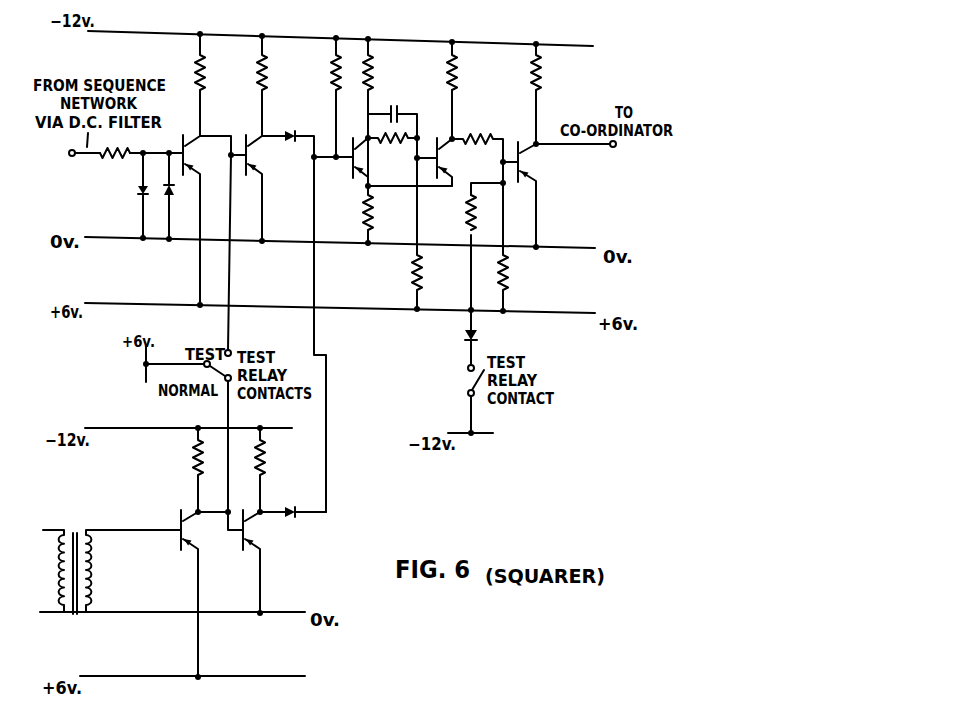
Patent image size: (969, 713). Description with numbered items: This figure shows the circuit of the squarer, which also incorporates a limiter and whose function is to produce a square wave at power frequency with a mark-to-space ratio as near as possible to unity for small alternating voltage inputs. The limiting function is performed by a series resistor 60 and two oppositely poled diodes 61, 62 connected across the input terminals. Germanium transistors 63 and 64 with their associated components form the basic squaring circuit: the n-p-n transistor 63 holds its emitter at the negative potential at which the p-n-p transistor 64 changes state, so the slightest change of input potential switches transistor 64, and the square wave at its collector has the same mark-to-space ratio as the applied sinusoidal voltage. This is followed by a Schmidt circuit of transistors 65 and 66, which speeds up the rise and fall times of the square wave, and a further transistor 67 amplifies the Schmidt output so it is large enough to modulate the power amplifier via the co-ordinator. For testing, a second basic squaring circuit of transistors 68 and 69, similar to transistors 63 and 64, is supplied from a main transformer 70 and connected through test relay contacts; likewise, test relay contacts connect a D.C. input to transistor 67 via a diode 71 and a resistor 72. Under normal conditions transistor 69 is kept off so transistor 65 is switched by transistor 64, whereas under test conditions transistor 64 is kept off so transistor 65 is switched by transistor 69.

The series resistor 60 is at (109, 156).
The diode 61 is at (139, 195).
The diode 62 is at (171, 189).
The germanium transistor 63 is at (210, 167).
The p-n-p transistor 64 is at (273, 167).
The transistor 65 is at (378, 170).
The transistor 66 is at (463, 170).
The transistor 67 is at (548, 172).
The transistor 68 is at (210, 544).
The transistor 69 is at (272, 544).
The main transformer 70 is at (118, 582).
The diode 71 is at (466, 338).
The resistor 72 is at (466, 220).